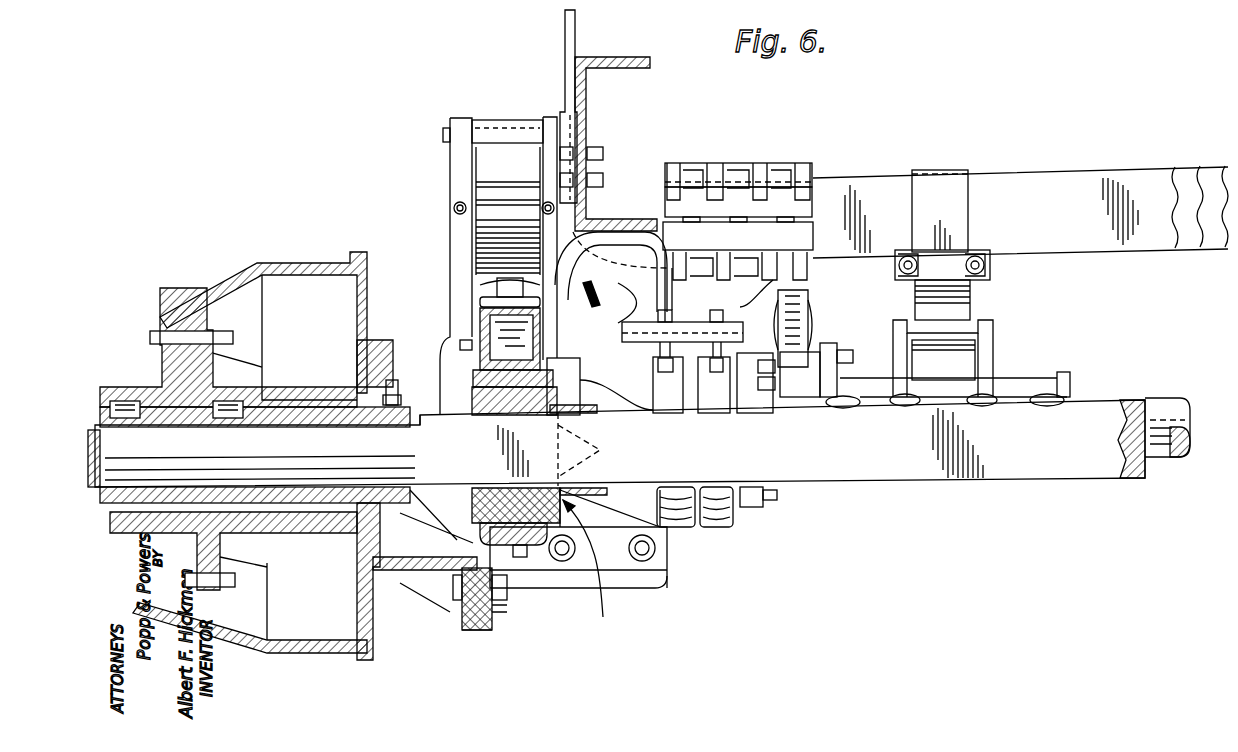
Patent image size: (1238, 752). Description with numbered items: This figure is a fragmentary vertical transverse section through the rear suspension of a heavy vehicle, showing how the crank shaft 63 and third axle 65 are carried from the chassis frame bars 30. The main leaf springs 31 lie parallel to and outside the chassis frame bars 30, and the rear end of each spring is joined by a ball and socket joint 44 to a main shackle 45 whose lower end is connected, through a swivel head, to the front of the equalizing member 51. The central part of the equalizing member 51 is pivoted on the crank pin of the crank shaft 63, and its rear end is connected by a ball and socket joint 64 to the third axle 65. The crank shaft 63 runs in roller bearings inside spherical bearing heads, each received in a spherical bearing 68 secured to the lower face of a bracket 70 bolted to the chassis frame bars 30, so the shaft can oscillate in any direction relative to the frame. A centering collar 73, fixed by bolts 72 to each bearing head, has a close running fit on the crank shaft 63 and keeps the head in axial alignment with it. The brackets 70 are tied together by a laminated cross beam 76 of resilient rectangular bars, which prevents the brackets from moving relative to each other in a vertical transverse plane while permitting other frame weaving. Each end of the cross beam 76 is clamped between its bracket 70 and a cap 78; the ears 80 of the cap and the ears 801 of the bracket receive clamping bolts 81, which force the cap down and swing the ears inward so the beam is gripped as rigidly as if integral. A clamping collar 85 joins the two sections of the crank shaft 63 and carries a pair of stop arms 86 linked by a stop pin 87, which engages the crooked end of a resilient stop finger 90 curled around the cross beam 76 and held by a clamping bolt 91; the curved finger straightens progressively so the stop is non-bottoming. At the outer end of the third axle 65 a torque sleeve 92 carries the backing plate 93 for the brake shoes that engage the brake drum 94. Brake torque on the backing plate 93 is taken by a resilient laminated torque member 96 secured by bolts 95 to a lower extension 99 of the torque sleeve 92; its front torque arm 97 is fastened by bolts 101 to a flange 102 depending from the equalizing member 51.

The chassis frame bars 30 is at (633, 56).
The main leaf springs 31 is at (472, 256).
The ball and socket joint 44 is at (452, 193).
The main shackle 45 is at (462, 294).
The equalizing member 51 is at (536, 546).
The crank shaft 63 is at (1160, 397).
The ball and socket joint 64 is at (589, 565).
The third axle 65 is at (838, 488).
The spherical bearing 68 is at (655, 345).
The bracket 70 is at (606, 306).
The bolts 72 is at (777, 497).
The centering collar 73 is at (768, 404).
The laminated cross beam 76 is at (1090, 176).
The cap 78 is at (765, 165).
The ears 80 is at (738, 202).
The ears 801 is at (738, 251).
The clamping bolts 81 is at (782, 222).
The clamping collar 85 is at (1040, 372).
The stop arms 86 is at (980, 351).
The stop pin 87 is at (988, 330).
The resilient stop finger 90 is at (968, 311).
The clamping bolt 91 is at (992, 278).
The torque sleeve 92 is at (398, 370).
The backing plate 93 is at (370, 612).
The brake drum 94 is at (280, 263).
The bolts 95 is at (465, 580).
The torque member 96 is at (493, 614).
The front torque arm 97 is at (664, 568).
The lower extension 99 is at (480, 633).
The bolts 101 is at (565, 560).
The flange 102 is at (664, 590).